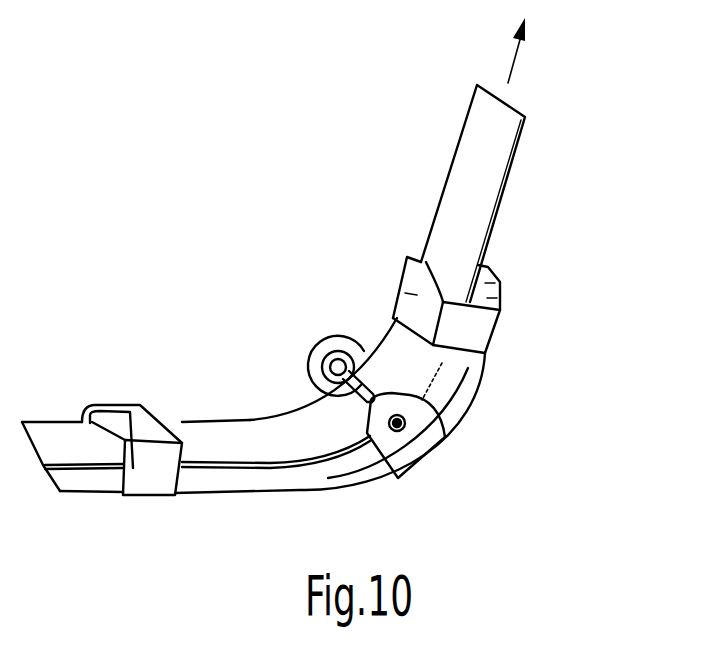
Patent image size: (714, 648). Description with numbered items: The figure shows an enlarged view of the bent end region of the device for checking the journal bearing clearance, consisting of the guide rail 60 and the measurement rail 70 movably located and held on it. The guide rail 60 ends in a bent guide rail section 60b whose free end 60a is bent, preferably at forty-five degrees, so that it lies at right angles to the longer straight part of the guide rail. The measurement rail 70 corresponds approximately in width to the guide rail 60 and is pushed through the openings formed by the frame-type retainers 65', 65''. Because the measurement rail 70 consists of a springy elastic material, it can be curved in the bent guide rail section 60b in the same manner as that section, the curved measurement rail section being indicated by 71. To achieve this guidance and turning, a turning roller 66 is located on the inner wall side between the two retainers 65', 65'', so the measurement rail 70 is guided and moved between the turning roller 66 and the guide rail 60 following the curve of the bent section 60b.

The guide rail 60 is at (263, 473).
The free end of the guide rail 60a is at (502, 300).
The bent guide rail section 60b is at (460, 420).
The frame-type retainer 65' is at (132, 374).
The frame-type retainer 65'' is at (391, 269).
The turning roller 66 is at (358, 403).
The measurement rail 70 is at (247, 432).
The curved measurement rail section 71 is at (468, 190).